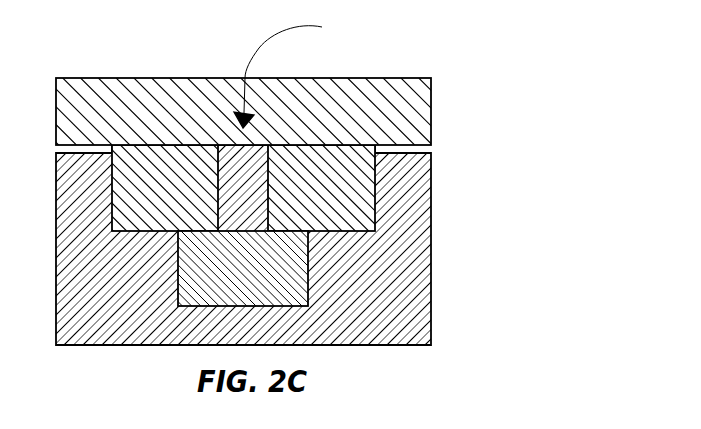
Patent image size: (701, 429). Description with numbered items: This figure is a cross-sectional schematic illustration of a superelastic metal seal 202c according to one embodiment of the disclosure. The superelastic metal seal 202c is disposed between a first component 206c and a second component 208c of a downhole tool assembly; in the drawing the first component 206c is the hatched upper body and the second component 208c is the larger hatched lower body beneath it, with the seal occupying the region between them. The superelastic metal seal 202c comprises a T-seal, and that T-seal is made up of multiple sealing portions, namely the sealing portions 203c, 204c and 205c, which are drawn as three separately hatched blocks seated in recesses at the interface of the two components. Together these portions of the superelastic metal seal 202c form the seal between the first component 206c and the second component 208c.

The superelastic metal seal 202c is at (301, 73).
The sealing portion 203c is at (343, 200).
The sealing portion 204c is at (280, 292).
The sealing portion 205c is at (154, 177).
The first component 206c is at (431, 112).
The second component 208c is at (431, 250).